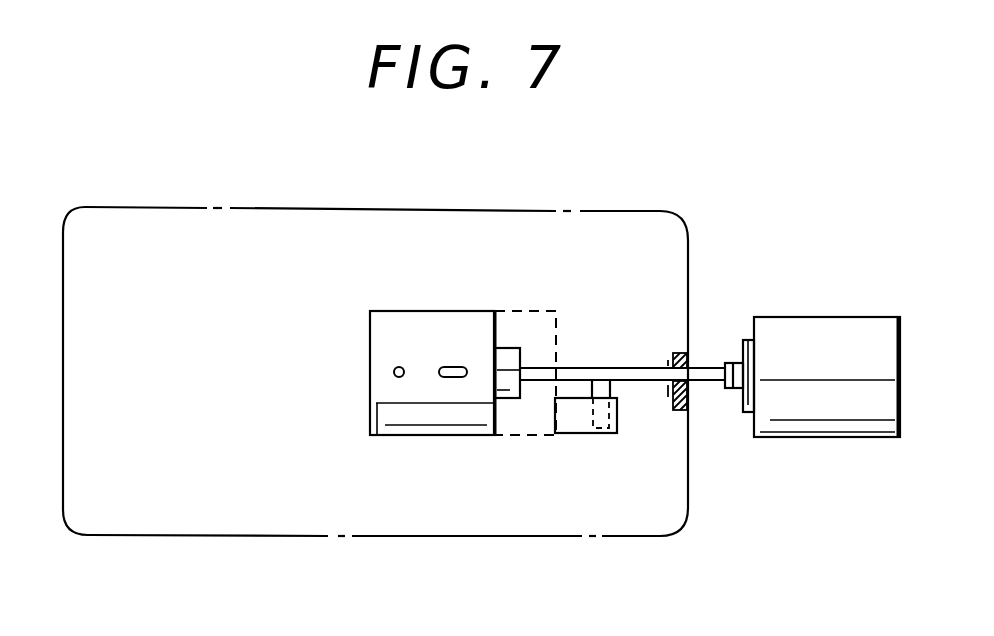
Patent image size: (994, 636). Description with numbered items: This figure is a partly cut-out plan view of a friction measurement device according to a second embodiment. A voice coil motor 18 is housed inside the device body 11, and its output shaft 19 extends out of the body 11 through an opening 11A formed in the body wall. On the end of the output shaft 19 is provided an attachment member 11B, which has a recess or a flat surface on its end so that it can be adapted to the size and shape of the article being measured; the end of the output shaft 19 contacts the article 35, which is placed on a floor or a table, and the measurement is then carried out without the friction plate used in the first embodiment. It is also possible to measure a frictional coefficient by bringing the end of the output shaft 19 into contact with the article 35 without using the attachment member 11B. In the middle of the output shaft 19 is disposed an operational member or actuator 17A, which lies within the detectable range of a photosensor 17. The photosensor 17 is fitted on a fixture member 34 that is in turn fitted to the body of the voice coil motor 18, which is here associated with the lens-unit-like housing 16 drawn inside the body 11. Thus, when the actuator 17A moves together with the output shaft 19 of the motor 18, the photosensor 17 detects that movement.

The device body 11 is at (468, 209).
The opening 11A is at (686, 357).
The attachment member 11B is at (733, 383).
The lens unit 16 is at (477, 311).
The photosensor 17 is at (577, 437).
The actuator 17A is at (597, 390).
The voice coil motor 18 is at (414, 298).
The output shaft 19 is at (707, 381).
The fixture member 34 is at (542, 311).
The article 35 is at (826, 317).